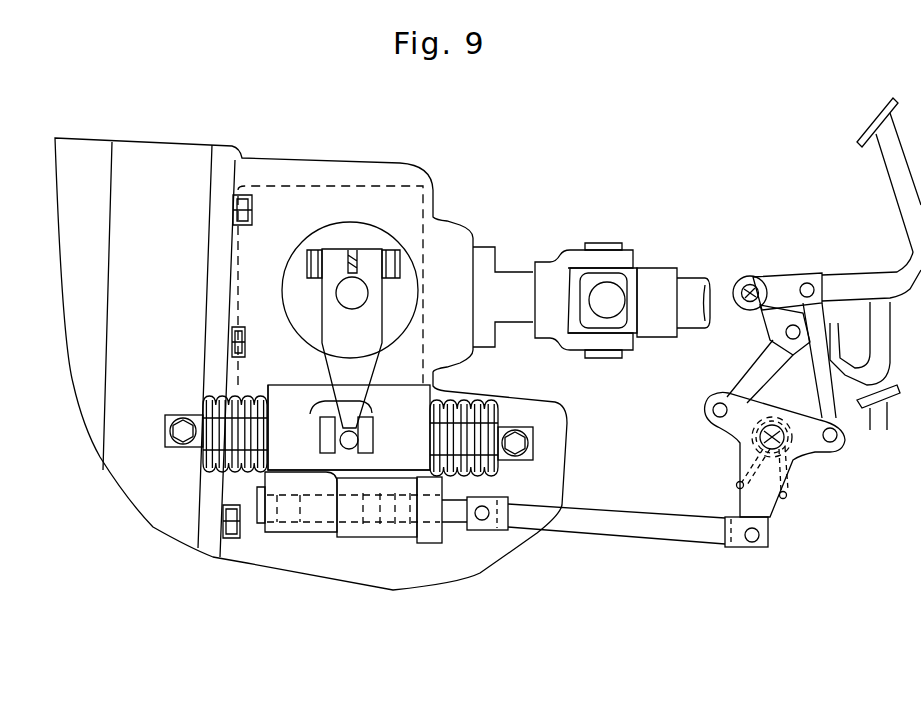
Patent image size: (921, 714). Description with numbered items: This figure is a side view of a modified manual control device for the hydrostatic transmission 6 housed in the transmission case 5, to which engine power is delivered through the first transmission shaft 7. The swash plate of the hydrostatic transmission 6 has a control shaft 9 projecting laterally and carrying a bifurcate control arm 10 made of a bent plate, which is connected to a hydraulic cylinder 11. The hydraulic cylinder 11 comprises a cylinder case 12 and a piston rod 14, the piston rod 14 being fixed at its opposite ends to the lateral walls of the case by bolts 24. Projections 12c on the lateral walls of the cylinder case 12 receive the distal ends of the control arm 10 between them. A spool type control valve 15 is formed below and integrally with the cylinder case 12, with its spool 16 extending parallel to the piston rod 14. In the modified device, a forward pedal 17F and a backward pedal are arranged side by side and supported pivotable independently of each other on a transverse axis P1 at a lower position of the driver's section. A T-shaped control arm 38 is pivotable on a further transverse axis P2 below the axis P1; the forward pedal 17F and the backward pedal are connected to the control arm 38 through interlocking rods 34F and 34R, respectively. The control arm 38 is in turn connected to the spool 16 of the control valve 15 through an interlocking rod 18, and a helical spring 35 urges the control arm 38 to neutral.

The transmission case 5 is at (100, 142).
The hydrostatic transmission 6 is at (318, 184).
The first transmission shaft 7 is at (690, 288).
The control shaft 9 is at (336, 293).
The control arm 10 is at (325, 317).
The hydraulic cylinder 11 is at (290, 384).
The cylinder case 12 is at (404, 387).
The projections 12c is at (321, 418).
The piston rod 14 is at (220, 418).
The control valve 15 is at (318, 522).
The spool 16 is at (451, 522).
The forward pedal 17F is at (863, 130).
The interlocking rod 18 is at (652, 533).
The bolts 24 is at (181, 434).
The interlocking rod 34R is at (753, 364).
The interlocking rod 34F is at (830, 408).
The helical spring 35 is at (813, 445).
The control arm 38 is at (764, 507).
The transverse axis P1 is at (752, 288).
The further transverse axis P2 is at (760, 443).